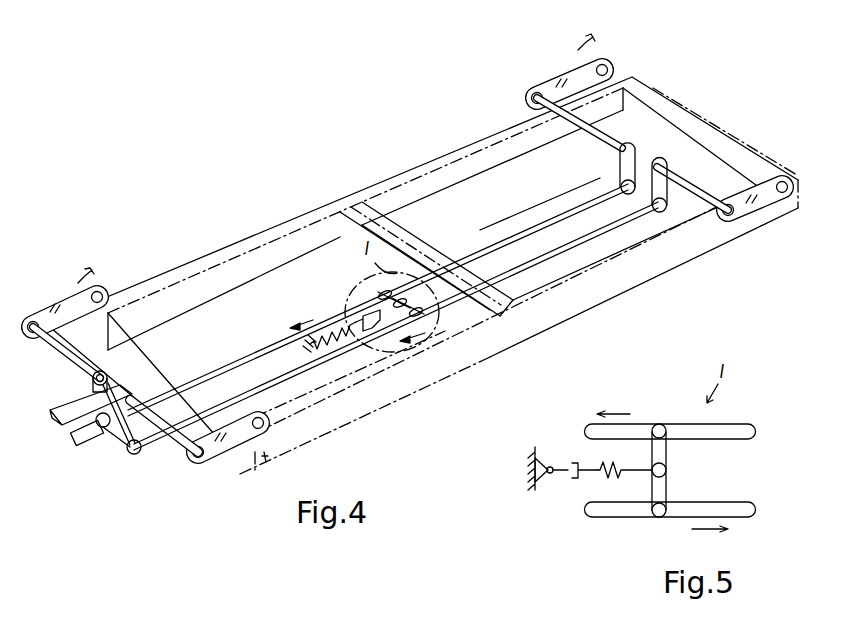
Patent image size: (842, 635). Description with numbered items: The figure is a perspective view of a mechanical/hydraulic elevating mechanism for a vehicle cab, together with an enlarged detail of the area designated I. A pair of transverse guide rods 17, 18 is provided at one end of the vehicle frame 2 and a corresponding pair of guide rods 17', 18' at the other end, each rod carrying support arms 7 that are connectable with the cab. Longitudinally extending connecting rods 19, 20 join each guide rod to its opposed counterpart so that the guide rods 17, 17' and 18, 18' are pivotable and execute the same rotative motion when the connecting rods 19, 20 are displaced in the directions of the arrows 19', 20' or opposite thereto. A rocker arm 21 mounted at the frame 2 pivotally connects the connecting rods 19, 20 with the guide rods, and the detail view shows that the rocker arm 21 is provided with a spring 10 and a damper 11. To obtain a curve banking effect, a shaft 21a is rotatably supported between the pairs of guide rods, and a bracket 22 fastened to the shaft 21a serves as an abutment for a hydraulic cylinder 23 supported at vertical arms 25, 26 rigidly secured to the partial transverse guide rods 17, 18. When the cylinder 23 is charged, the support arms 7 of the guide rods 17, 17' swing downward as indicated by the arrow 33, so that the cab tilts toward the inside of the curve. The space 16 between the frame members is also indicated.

In FIG. 4, the frame 2 is at (397, 180).
In FIG. 4, the support arms 7 is at (57, 307).
In FIG. 4, the spring 10 is at (337, 328).
In FIG. 5, the spring 10 is at (600, 478).
In FIG. 4, the damper 11 is at (385, 334).
In FIG. 4, the frame opening 16 is at (490, 212).
In FIG. 4, the partial transverse guide rod 17 is at (164, 442).
In FIG. 4, the transverse guide rod 17' is at (704, 157).
In FIG. 4, the partial transverse guide rod 18 is at (65, 352).
In FIG. 4, the transverse guide rod 18' is at (586, 146).
In FIG. 4, the connecting rod 19 is at (378, 300).
In FIG. 5, the connecting rod 19 is at (670, 405).
In FIG. 4, the arrow 19' is at (290, 304).
In FIG. 4, the connecting rod 20 is at (396, 326).
In FIG. 5, the connecting rod 20 is at (670, 530).
In FIG. 4, the arrow 20' is at (437, 346).
In FIG. 4, the rocker arm 21 is at (418, 308).
In FIG. 5, the rocker arm 21 is at (663, 485).
In FIG. 4, the shaft 21a is at (117, 392).
In FIG. 4, the bracket 22 is at (62, 427).
In FIG. 4, the hydraulic cylinder 23 is at (89, 447).
In FIG. 4, the vertical arm 25 is at (135, 456).
In FIG. 4, the vertical arm 26 is at (92, 383).
In FIG. 4, the arrow 33 is at (268, 456).